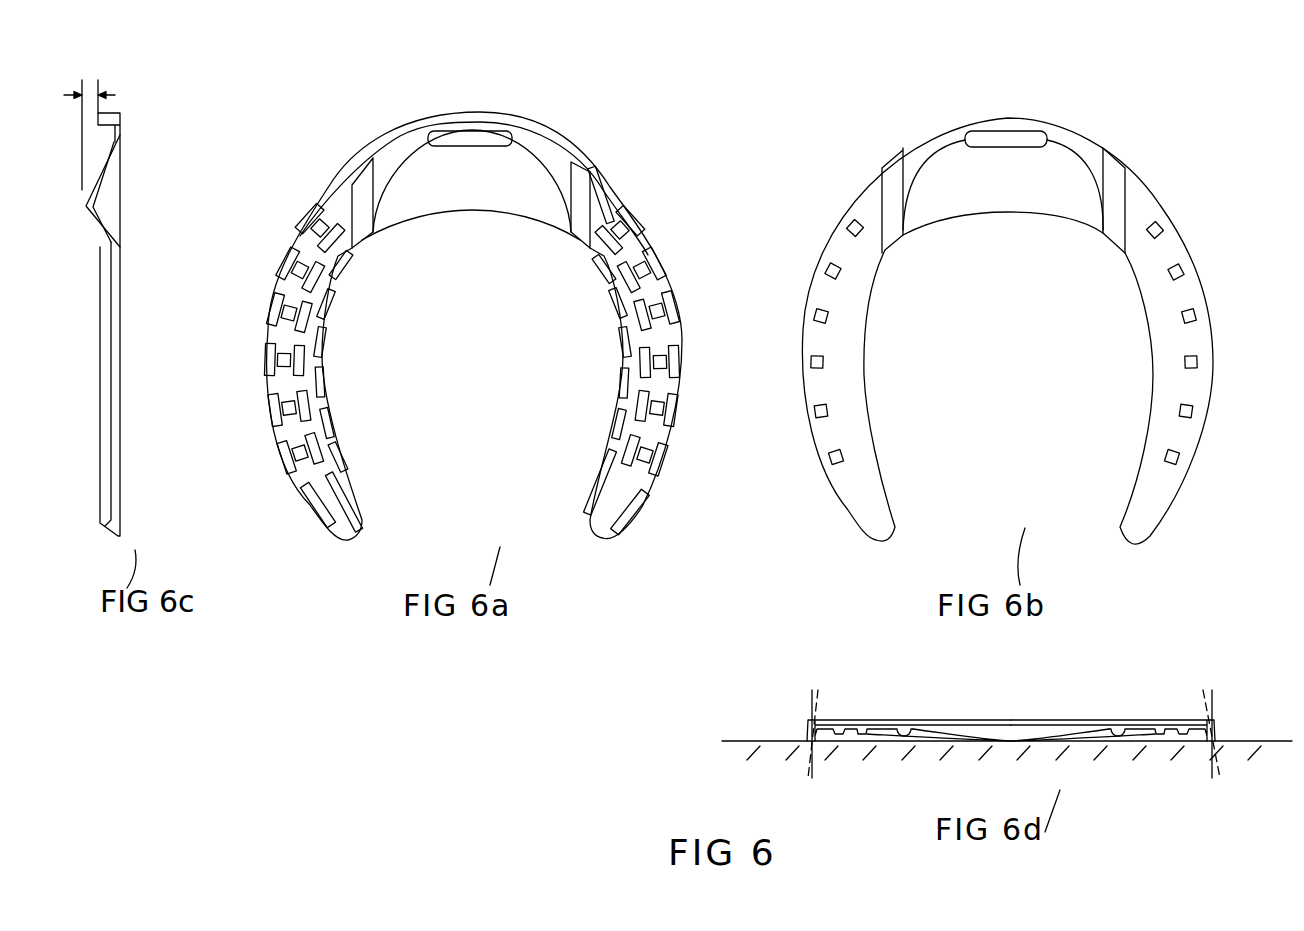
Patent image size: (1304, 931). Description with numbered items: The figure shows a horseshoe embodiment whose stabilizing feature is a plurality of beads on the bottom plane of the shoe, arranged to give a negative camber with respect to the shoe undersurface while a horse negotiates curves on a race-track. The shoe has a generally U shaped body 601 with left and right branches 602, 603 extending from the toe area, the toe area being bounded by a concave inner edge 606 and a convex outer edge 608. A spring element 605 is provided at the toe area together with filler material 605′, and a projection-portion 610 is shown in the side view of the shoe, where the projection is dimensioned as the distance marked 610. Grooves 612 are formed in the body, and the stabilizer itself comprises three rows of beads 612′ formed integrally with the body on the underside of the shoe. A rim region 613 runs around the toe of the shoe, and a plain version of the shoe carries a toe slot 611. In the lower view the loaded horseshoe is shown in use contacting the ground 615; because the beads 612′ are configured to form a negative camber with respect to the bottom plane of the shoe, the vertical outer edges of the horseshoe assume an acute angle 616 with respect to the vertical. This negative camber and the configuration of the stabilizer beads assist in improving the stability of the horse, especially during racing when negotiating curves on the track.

In FIG. 6B, the generally U shaped body 601 is at (810, 282).
In FIG. 6A, the left branch 602 is at (353, 530).
In FIG. 6A, the right branch 603 is at (602, 527).
In FIG. 6A, the spring element 605 is at (530, 158).
In FIG. 6C, the filler material 605′ is at (197, 213).
In FIG. 6C, the concave inner edge of the toe area 606 is at (108, 184).
In FIG. 6A, the concave inner edge of the toe area 606 is at (478, 213).
In FIG. 6A, the convex outer edge of the toe area 608 is at (410, 142).
In FIG. 6C, the projection-portion 610 is at (93, 97).
In FIG. 6B, the toe slot 611 is at (1003, 134).
In FIG. 6A, the grooves 612 is at (363, 180).
In FIG. 6A, the beads 612′ is at (409, 294).
In FIG. 6A, the outer rim 613 is at (486, 116).
In FIG. 6D, the ground 615 is at (1011, 767).
In FIG. 6D, the acute angle 616 is at (818, 693).